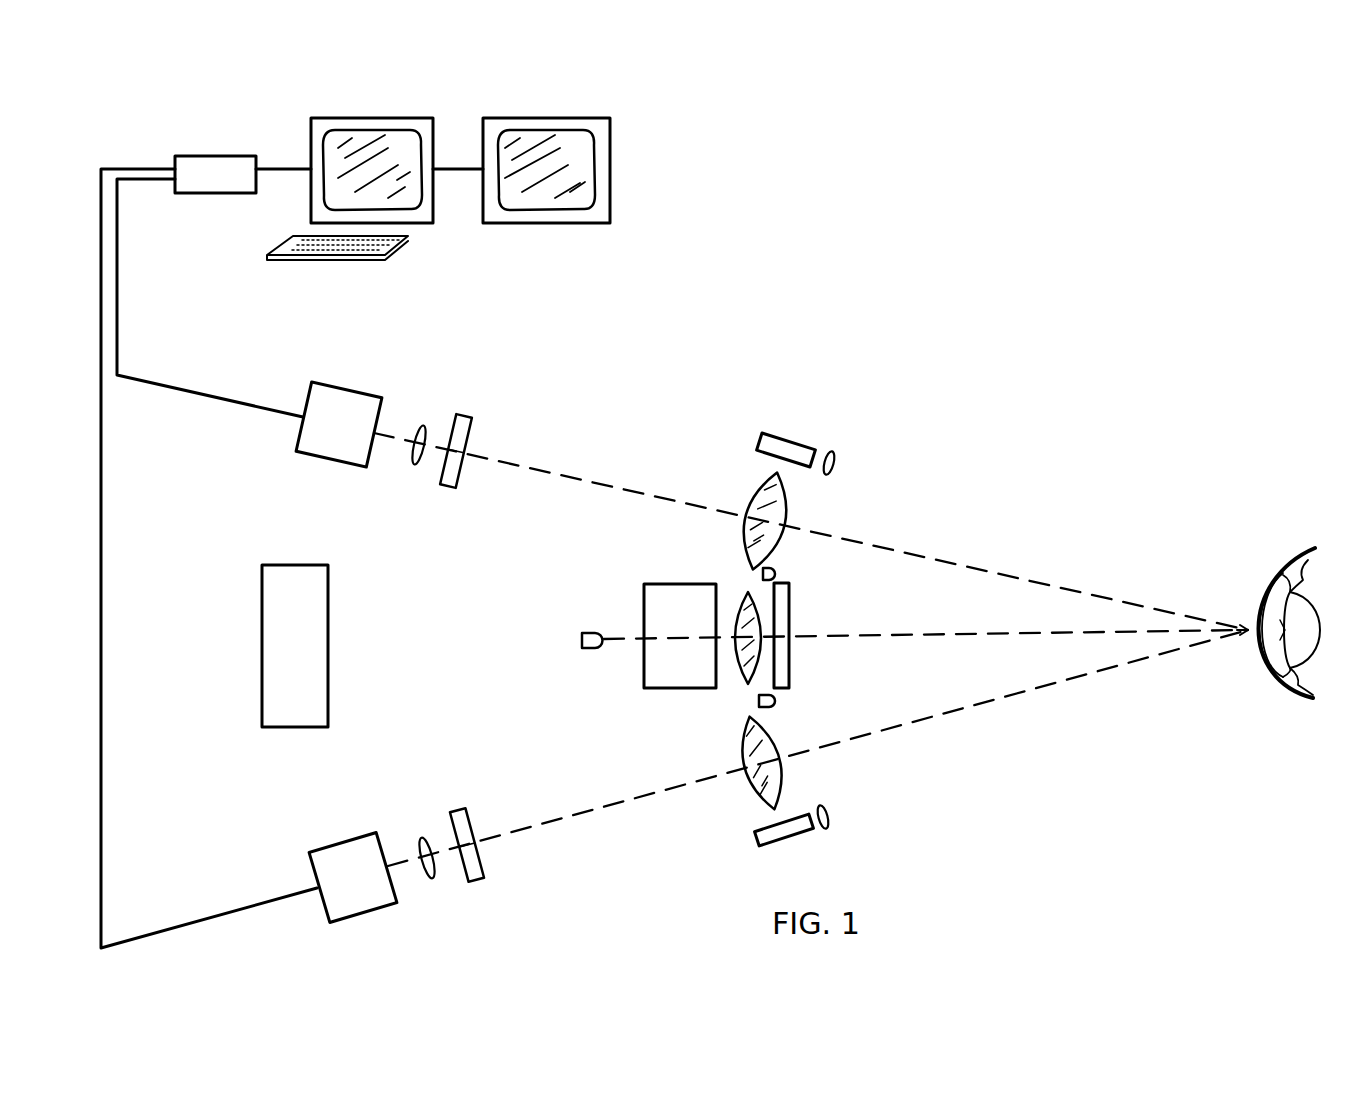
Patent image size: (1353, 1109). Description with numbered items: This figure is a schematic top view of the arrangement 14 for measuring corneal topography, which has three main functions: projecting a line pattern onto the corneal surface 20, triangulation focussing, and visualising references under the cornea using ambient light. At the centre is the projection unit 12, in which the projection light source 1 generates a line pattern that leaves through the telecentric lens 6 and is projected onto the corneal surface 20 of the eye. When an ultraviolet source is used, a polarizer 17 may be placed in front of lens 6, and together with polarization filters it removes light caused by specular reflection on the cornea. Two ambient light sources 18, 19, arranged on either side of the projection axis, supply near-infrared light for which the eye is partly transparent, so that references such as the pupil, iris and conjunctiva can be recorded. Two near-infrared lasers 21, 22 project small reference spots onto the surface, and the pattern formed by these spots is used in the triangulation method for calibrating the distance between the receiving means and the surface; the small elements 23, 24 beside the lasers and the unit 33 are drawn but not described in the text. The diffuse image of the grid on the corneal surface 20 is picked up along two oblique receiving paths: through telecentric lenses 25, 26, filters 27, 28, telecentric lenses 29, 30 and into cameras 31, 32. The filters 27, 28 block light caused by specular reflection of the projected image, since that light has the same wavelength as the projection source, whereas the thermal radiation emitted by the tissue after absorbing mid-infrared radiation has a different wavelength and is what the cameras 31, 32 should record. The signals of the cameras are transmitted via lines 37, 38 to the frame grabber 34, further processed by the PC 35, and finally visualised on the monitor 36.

The projection light source 1 is at (588, 632).
The telecentric lens 6 is at (738, 600).
The projection unit 12 is at (687, 690).
The arrangement 14 is at (1010, 737).
The polarizer 17 is at (790, 663).
The ambient light source 18 is at (777, 570).
The ambient light source 19 is at (778, 702).
The corneal surface 20 is at (1265, 673).
The near-IR laser 21 is at (783, 440).
The near-IR laser 22 is at (795, 840).
The lens 23 is at (838, 462).
The lens 24 is at (832, 815).
The telecentric lens 25 is at (760, 492).
The telecentric lens 26 is at (757, 790).
The filter 27 is at (465, 413).
The filter 28 is at (455, 808).
The telecentric lens 29 is at (425, 428).
The telecentric lens 30 is at (428, 835).
The camera 31 is at (354, 390).
The camera 32 is at (333, 840).
The unit 33 is at (330, 647).
The frame grabber 34 is at (212, 156).
The PC 35 is at (363, 118).
The monitor 36 is at (547, 118).
The line 37 is at (197, 392).
The line 38 is at (214, 915).